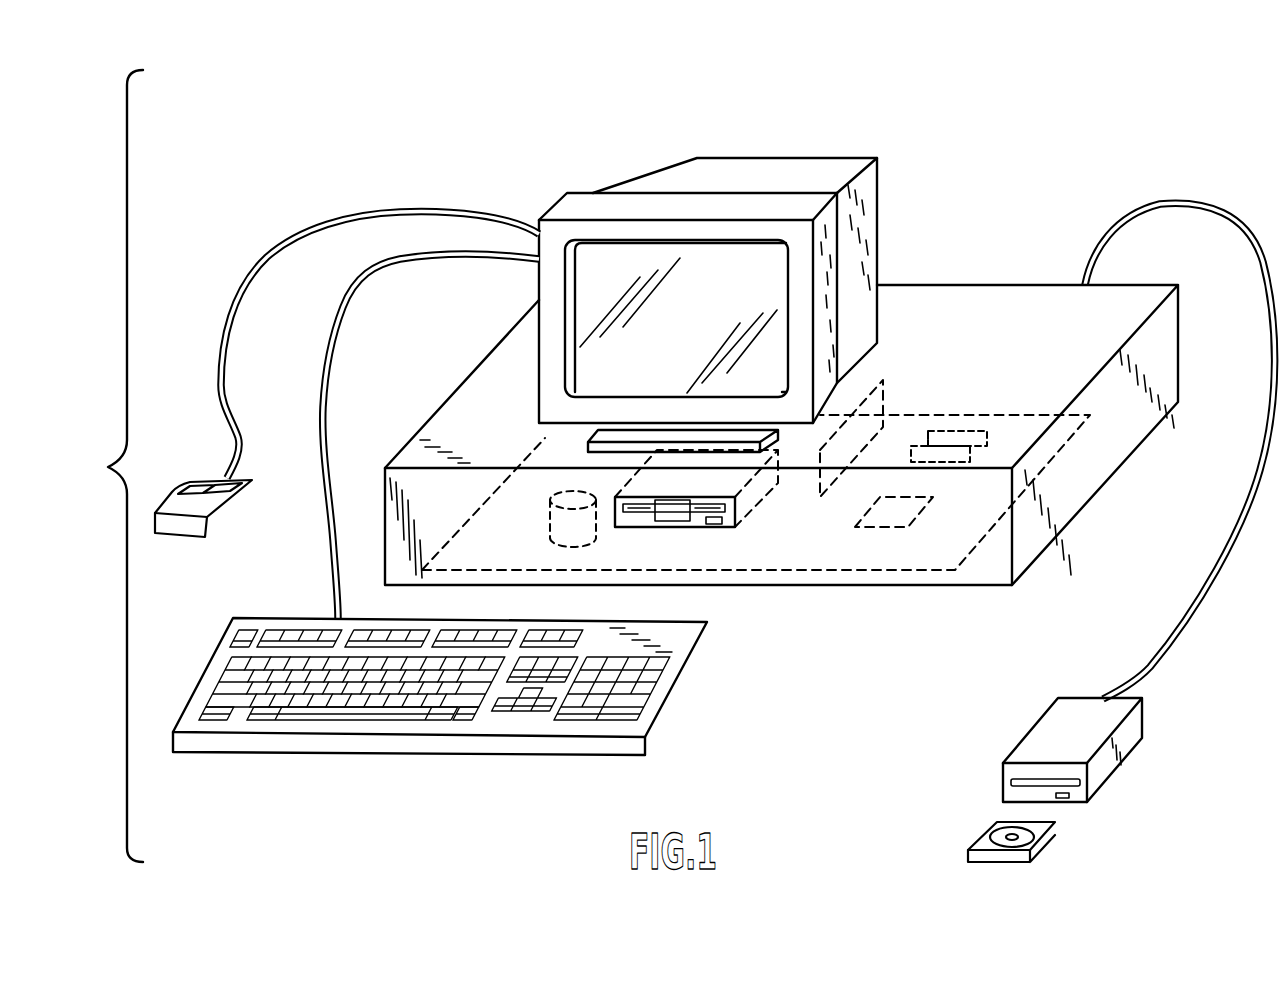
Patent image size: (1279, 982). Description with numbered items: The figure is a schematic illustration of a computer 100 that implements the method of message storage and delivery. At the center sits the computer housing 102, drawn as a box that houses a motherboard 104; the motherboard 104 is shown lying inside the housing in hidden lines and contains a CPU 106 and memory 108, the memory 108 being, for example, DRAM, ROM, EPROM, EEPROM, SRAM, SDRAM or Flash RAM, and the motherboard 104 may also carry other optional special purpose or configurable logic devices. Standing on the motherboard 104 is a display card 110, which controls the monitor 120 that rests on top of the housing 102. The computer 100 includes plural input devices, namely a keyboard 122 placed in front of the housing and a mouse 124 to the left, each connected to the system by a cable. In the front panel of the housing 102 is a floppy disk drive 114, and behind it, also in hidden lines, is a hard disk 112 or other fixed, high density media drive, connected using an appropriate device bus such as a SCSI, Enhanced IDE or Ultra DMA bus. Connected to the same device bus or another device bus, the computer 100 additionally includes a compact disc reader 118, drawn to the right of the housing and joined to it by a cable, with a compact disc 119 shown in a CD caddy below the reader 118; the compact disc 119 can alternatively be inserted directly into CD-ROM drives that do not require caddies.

The computer 100 is at (101, 466).
The computer housing 102 is at (975, 292).
The motherboard 104 is at (1030, 425).
The CPU 106 is at (910, 515).
The memory 108 is at (947, 428).
The display card 110 is at (887, 393).
The hard disk 112 is at (550, 533).
The floppy disk drive 114 is at (730, 520).
The compact disc reader 118 is at (1055, 715).
The compact disc 119 is at (1030, 838).
The monitor 120 is at (782, 177).
The keyboard 122 is at (698, 665).
The mouse 124 is at (235, 505).